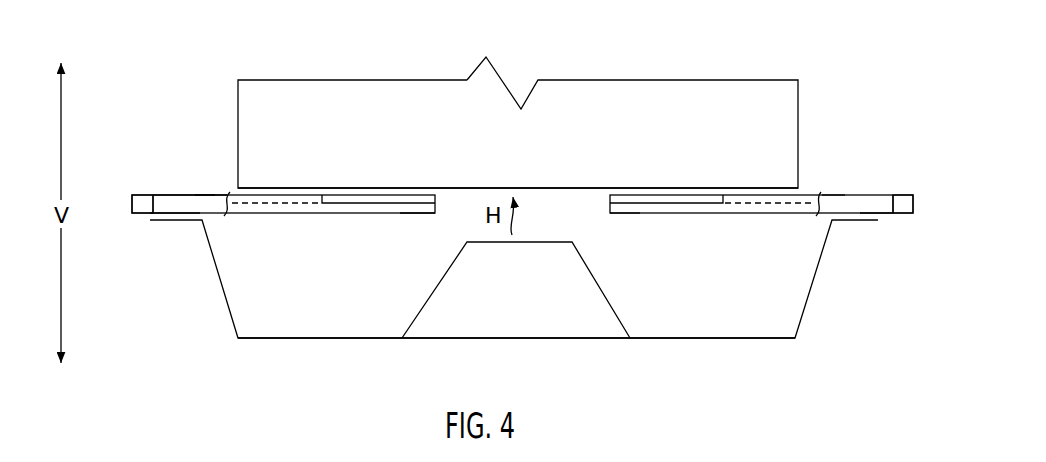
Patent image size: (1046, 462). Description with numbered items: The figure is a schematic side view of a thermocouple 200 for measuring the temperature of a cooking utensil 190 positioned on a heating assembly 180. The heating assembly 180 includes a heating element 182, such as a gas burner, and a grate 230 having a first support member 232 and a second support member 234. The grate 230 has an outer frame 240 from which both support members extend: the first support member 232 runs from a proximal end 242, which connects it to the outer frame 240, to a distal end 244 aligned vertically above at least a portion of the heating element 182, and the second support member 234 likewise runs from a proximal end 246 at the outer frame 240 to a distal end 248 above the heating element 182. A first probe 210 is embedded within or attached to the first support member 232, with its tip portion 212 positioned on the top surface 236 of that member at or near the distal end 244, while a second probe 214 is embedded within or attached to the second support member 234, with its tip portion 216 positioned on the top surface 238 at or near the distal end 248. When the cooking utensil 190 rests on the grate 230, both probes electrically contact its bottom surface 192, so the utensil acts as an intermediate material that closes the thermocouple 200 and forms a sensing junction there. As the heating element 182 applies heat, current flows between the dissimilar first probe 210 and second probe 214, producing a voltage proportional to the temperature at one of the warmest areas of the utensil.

The heating assembly 180 is at (193, 263).
The heating element 182 is at (433, 322).
The cooking utensil 190 is at (671, 100).
The bottom surface 192 is at (581, 197).
The thermocouple 200 is at (607, 180).
The first probe 210 is at (353, 195).
The tip portion 212 is at (377, 216).
The second probe 214 is at (697, 197).
The tip portion 216 is at (660, 216).
The grate 230 is at (297, 224).
The first support member 232 is at (178, 194).
The second support member 234 is at (857, 194).
The top surface 236 is at (203, 192).
The top surface 238 is at (832, 192).
The outer frame 240 is at (143, 193).
The proximal end 242 is at (147, 220).
The distal end 244 is at (434, 222).
The proximal end 246 is at (888, 224).
The distal end 248 is at (609, 225).